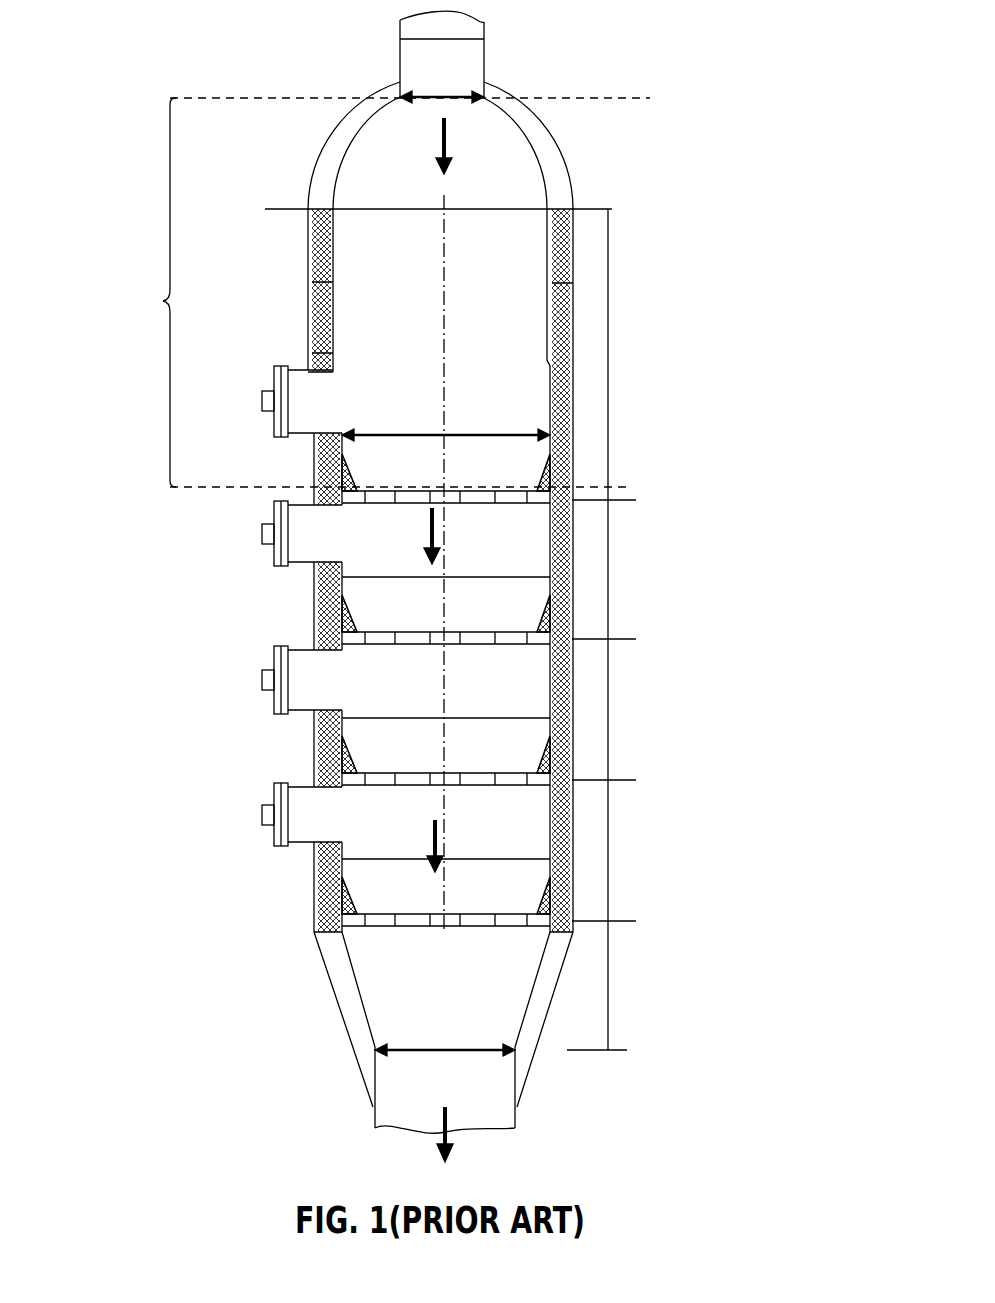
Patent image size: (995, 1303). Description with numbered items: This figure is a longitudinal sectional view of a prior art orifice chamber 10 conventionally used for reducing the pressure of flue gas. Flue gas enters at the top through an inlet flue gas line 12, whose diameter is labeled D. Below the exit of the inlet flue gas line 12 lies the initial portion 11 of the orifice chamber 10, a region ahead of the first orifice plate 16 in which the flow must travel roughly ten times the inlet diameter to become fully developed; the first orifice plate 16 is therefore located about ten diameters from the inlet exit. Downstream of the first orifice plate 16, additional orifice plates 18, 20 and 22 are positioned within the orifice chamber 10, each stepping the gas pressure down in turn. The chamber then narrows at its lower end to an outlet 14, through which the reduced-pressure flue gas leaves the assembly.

The orifice chamber 10 is at (568, 150).
The initial portion 11 is at (165, 309).
The inlet flue gas line 12 is at (486, 62).
The outlet pipe 14 is at (520, 1107).
The first orifice plate 16 is at (490, 491).
The additional orifice plate 18 is at (474, 631).
The additional orifice plate 20 is at (481, 772).
The additional orifice plate 22 is at (479, 913).